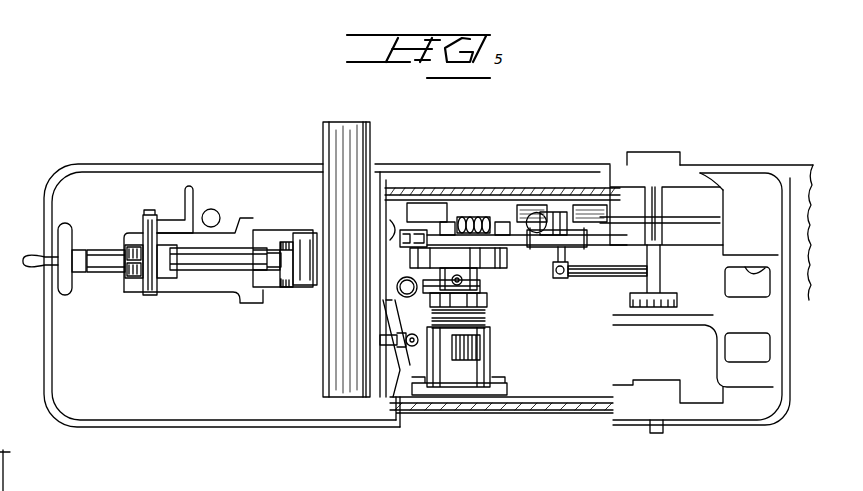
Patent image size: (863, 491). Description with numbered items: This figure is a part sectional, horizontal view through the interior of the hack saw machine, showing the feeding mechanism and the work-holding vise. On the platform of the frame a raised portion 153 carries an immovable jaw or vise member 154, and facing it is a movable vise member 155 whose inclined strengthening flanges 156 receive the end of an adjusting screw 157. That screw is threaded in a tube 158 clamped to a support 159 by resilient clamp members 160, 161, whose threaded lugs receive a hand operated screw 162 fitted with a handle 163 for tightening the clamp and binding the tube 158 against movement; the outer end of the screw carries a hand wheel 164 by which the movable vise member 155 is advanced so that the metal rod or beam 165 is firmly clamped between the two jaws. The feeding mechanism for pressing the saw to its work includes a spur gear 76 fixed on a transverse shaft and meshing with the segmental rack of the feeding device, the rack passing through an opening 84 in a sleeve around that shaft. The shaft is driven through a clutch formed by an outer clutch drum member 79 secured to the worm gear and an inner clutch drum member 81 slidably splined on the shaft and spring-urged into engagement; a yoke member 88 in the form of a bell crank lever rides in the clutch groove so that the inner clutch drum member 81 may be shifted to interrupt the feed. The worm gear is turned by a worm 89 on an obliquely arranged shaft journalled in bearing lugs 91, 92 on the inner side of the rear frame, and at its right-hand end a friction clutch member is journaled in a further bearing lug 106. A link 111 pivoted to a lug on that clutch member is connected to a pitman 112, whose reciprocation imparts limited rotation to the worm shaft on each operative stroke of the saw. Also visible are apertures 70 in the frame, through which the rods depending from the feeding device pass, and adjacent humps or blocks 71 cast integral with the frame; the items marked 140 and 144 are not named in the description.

The apertures 70 is at (765, 340).
The humps or blocks 71 is at (763, 260).
The spur gear 76 is at (480, 350).
The outer clutch drum member 79 is at (507, 262).
The inner clutch drum member 81 is at (478, 277).
The opening 84 is at (485, 337).
The yoke member 88 is at (480, 290).
The worm 89 is at (473, 222).
The bearing lug 91 is at (423, 212).
The bearing lug 92 is at (532, 213).
The bearing lug 106 is at (585, 205).
The link 111 is at (557, 275).
The pitman 112 is at (600, 276).
The pivot pin 140 is at (407, 297).
The lever 144 is at (372, 305).
The raised portion 153 is at (247, 300).
The immovable jaw or vise member 154 is at (403, 347).
The movable vise member 155 is at (323, 290).
The inclined strengthening flanges 156 is at (263, 230).
The adjusting screw 157 is at (288, 237).
The tube 158 is at (205, 263).
The support 159 is at (133, 280).
The resilient clamp member 160 is at (123, 282).
The resilient clamp member 161 is at (133, 253).
The hand operated screw 162 is at (147, 215).
The handle 163 is at (180, 222).
The hand wheel 164 is at (62, 283).
The metal rod or beam 165 is at (343, 367).